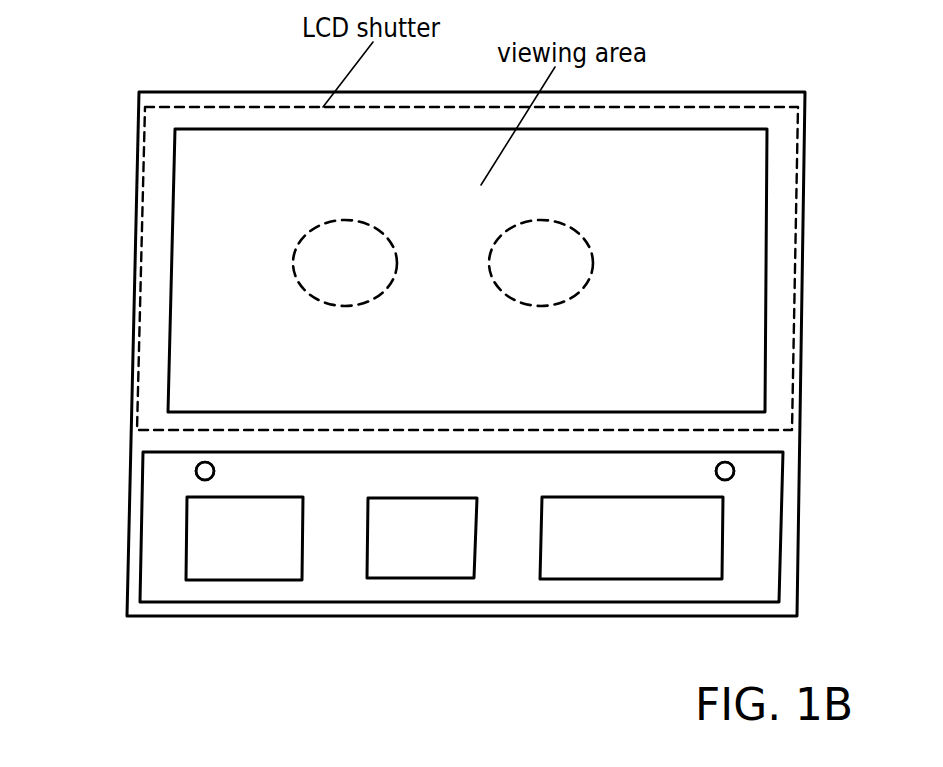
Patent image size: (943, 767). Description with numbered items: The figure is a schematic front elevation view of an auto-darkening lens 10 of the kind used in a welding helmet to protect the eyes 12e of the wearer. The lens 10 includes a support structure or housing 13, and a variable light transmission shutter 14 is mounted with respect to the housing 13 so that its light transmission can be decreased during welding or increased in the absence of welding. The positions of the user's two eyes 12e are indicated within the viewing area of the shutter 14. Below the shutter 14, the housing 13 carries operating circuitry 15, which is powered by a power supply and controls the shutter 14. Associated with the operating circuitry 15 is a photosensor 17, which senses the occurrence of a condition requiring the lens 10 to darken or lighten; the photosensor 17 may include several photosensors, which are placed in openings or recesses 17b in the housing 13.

The auto-darkening lens 10 is at (114, 78).
The support structure or housing 13 is at (137, 146).
The variable light transmission shutter 14 is at (215, 188).
The eyes 12e is at (370, 223).
The operating circuitry 15 is at (181, 556).
The photosensor 17 is at (820, 440).
The openings or recesses 17b is at (192, 474).